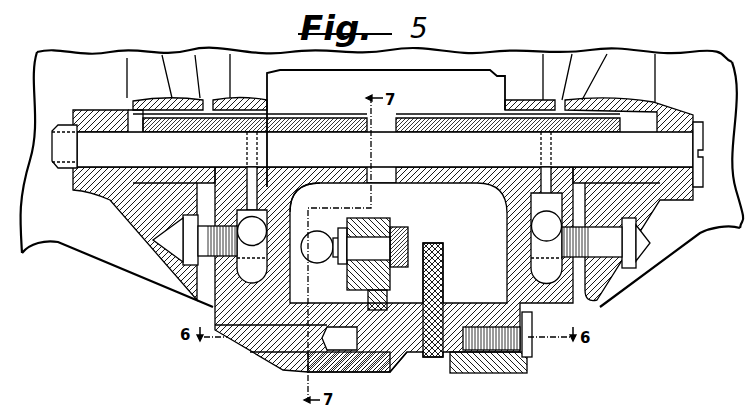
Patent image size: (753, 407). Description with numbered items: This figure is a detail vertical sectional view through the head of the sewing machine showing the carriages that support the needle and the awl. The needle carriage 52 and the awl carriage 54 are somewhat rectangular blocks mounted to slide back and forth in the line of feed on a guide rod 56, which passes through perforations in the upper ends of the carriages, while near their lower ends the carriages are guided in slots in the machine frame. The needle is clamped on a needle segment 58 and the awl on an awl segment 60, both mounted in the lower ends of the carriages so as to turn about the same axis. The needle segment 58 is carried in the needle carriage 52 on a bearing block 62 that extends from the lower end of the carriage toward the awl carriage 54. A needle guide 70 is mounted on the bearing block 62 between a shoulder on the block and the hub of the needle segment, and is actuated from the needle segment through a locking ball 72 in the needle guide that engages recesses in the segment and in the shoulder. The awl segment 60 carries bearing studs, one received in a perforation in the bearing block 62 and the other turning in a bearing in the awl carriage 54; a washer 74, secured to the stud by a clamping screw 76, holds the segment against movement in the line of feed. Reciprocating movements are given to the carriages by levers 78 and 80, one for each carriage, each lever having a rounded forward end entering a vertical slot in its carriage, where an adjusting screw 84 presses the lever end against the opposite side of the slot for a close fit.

The needle carriage 52 is at (213, 313).
The awl carriage 54 is at (503, 237).
The guide rod 56 is at (297, 142).
The needle segment 58 is at (345, 275).
The awl segment 60 is at (443, 272).
The bearing block 62 is at (335, 372).
The needle guide 70 is at (383, 373).
The locking ball 72 is at (362, 292).
The washer 74 is at (518, 363).
The clamping screw 76 is at (528, 353).
The lever 78 is at (305, 199).
The lever 80 is at (512, 220).
The adjusting screw 84 is at (157, 255).